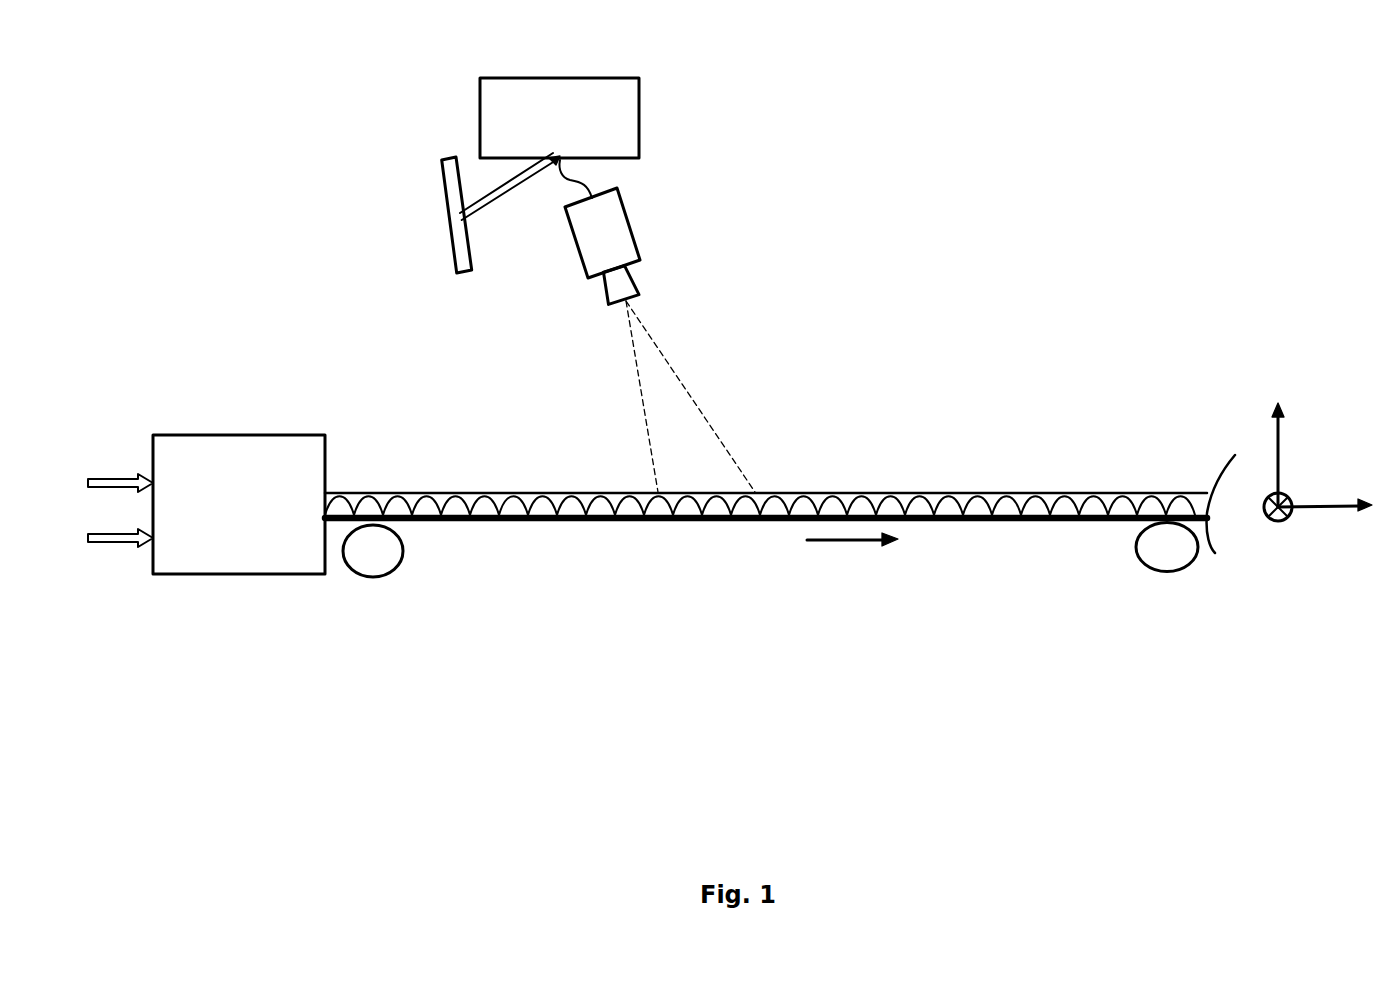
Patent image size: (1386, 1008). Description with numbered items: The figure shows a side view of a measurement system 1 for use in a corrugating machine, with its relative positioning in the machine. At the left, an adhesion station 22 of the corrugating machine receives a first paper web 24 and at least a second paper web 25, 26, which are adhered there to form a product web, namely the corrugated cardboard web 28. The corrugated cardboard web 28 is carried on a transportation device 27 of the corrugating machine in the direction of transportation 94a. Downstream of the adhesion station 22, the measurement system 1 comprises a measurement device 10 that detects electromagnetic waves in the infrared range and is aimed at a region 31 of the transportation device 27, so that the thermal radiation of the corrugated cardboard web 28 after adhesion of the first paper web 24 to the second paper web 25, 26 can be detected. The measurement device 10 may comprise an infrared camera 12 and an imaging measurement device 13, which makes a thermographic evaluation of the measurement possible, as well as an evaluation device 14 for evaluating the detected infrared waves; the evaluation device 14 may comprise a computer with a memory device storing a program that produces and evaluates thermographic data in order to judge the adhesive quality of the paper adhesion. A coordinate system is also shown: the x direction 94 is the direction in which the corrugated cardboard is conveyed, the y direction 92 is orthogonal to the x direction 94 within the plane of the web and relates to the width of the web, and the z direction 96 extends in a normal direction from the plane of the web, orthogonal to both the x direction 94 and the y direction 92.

The measurement system 1 is at (773, 80).
The measurement device 10 is at (649, 202).
The infrared camera 12 is at (640, 281).
The imaging measurement device 13 is at (445, 202).
The evaluation device 14 is at (480, 110).
The adhesion station 22 is at (218, 434).
The first paper web 24 is at (103, 476).
The second paper web 25 is at (132, 543).
The second paper web 26 is at (558, 495).
The transportation device 27 is at (782, 525).
The corrugated cardboard web 28 is at (931, 450).
The region 31 is at (732, 458).
The y direction 92 is at (1278, 527).
The x direction 94 is at (1322, 510).
The direction of transportation 94a is at (865, 543).
The z direction 96 is at (1282, 440).